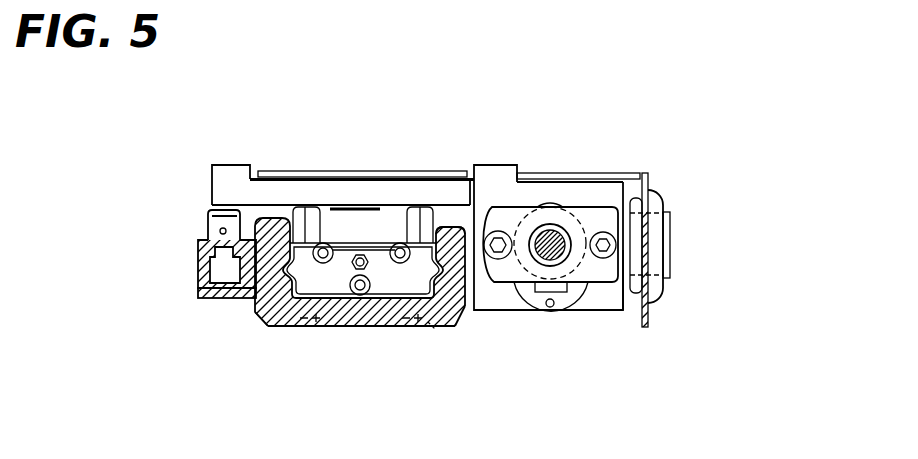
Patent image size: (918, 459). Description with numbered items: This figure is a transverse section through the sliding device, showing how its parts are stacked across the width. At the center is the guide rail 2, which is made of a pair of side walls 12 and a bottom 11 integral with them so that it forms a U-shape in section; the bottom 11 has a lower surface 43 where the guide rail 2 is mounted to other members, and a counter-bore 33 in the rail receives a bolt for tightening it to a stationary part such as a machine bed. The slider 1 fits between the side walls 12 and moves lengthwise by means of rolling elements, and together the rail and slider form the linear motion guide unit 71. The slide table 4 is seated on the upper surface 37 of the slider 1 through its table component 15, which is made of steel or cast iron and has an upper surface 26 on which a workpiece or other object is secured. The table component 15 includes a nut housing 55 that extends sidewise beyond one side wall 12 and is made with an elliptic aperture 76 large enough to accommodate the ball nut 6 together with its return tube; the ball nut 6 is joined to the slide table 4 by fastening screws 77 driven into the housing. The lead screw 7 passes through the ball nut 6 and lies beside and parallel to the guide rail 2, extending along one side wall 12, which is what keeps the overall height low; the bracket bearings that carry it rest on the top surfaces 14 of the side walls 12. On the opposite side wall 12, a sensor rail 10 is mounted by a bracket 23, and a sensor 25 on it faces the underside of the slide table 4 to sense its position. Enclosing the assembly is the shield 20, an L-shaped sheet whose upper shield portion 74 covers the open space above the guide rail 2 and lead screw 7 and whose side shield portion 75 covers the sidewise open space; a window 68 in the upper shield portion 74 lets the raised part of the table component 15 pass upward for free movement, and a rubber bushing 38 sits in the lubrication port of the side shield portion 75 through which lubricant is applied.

The slider 1 is at (391, 287).
The guide rail 2 is at (444, 304).
The slide table 4 is at (230, 178).
The ball nut 6 is at (533, 270).
The lead screw 7 is at (568, 258).
The sensor rail 10 is at (200, 262).
The bottom 11 is at (360, 310).
The side wall 12 is at (273, 236).
The top surface 14 is at (450, 226).
The table component 15 is at (500, 193).
The shield 20 is at (323, 171).
The bracket 23 is at (218, 297).
The sensor 25 is at (210, 226).
The upper surface 26 is at (240, 165).
The counter-bore 33 is at (432, 330).
The upper surface 37 is at (403, 195).
The bushing 38 is at (653, 200).
The lower surface 43 is at (303, 328).
The nut housing 55 is at (612, 300).
The window 68 is at (518, 178).
The linear motion guide unit 71 is at (247, 315).
The upper shield portion 74 is at (377, 172).
The side shield portion 75 is at (652, 290).
The elliptic aperture 76 is at (553, 293).
The fastening screw 77 is at (624, 278).